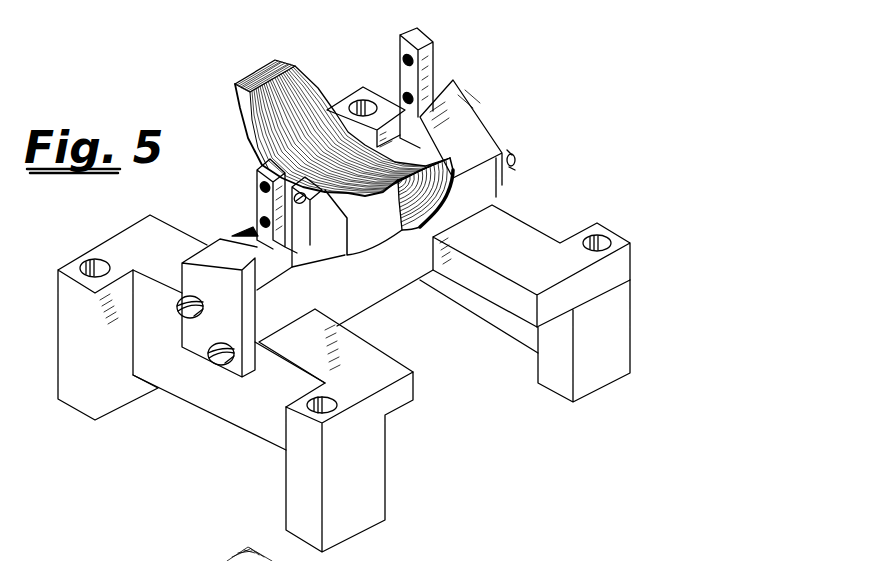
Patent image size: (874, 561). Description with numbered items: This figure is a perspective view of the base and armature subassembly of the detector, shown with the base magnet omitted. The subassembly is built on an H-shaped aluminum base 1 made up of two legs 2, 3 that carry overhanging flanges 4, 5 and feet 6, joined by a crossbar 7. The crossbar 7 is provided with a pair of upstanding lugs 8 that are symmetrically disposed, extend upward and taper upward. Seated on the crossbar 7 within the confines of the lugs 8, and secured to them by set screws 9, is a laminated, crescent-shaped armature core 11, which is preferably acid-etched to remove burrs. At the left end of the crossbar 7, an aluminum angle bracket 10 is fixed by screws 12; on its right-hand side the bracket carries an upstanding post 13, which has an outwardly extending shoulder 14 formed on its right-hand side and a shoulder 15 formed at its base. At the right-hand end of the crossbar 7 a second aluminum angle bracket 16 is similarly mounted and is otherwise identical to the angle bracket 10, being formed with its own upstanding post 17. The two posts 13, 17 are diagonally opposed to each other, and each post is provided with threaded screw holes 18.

The H-shaped aluminum base 1 is at (548, 134).
The leg 2 is at (242, 423).
The leg 3 is at (475, 312).
The overhanging flange 4 is at (400, 403).
The overhanging flange 5 is at (544, 323).
The feet 6 is at (118, 396).
The crossbar 7 is at (380, 292).
The lugs 8 is at (370, 147).
The set screws 9 is at (308, 202).
The aluminum angle bracket 10 is at (190, 338).
The laminated crescent-shaped armature core 11 is at (242, 105).
The screws 12 is at (177, 308).
The upstanding post 13 is at (257, 193).
The outwardly extending shoulder 14 is at (270, 203).
The shoulder 15 is at (252, 232).
The aluminum angle bracket 16 is at (475, 107).
The upstanding post 17 is at (402, 48).
The threaded screw holes 18 is at (402, 75).